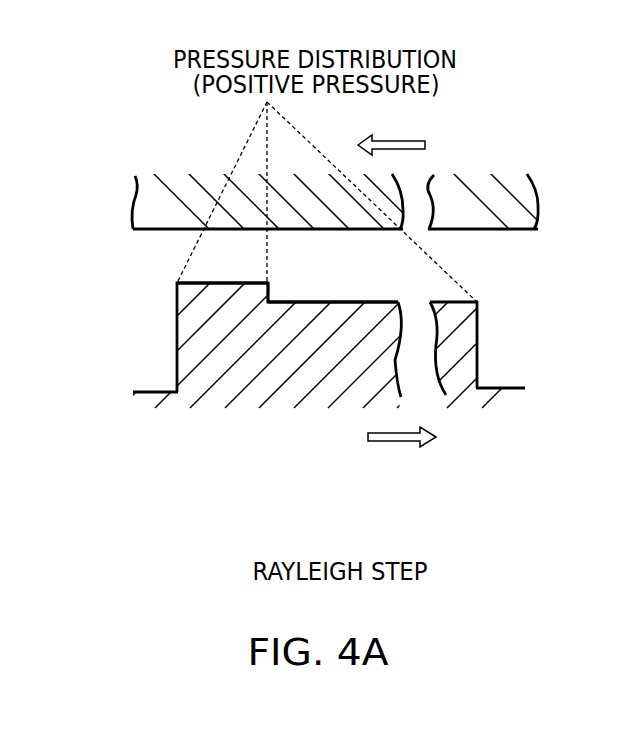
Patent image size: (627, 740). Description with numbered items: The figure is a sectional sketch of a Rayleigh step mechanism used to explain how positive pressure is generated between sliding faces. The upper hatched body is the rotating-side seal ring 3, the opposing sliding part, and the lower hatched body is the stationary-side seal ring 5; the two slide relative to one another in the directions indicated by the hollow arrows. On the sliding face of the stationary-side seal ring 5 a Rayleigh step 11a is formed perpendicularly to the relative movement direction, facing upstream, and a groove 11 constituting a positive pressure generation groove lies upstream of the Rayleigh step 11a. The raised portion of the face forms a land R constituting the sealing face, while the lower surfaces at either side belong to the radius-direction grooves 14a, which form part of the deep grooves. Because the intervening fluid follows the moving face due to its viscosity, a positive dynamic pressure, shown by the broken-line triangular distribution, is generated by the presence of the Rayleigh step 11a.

The rotating-side seal ring 3 is at (165, 183).
The stationary-side seal ring 5 is at (271, 407).
The groove 11 is at (390, 298).
The Rayleigh step 11a is at (300, 278).
The radius-direction groove 14a is at (135, 409).
The land R is at (220, 280).